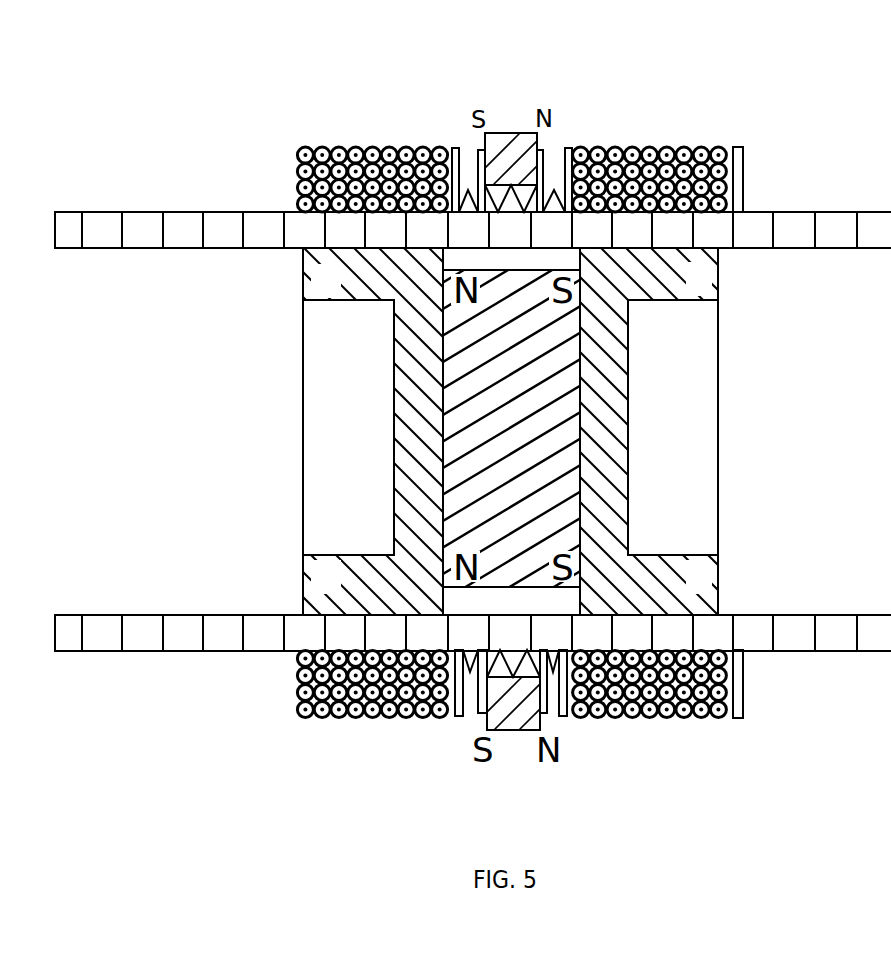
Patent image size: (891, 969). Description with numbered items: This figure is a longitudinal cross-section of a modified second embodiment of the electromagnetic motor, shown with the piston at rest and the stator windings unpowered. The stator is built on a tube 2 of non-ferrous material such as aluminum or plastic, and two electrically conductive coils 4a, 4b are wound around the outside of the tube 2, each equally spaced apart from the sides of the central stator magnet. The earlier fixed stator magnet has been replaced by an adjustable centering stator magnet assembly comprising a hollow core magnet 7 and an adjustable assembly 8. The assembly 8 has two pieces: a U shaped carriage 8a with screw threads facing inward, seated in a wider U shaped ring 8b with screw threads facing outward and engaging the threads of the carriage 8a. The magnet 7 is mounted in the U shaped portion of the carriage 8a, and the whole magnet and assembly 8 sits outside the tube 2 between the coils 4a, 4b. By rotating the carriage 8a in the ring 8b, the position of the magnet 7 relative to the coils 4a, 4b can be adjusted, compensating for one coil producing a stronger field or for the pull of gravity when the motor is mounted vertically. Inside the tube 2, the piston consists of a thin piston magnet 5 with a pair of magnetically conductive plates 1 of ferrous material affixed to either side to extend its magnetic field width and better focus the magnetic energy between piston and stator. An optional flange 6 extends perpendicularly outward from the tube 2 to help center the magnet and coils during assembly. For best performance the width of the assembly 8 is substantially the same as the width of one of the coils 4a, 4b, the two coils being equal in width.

The magnetically conductive plates 1 is at (305, 402).
The tube 2 is at (198, 212).
The electrically conductive coil 4a is at (398, 147).
The electrically conductive coil 4b is at (703, 147).
The piston magnet 5 is at (305, 510).
The flange 6 is at (747, 188).
The hollow core magnet 7 is at (507, 133).
The adjustable assembly 8 is at (470, 699).
The U shaped carriage 8a is at (545, 690).
The U shaped ring 8b is at (458, 168).